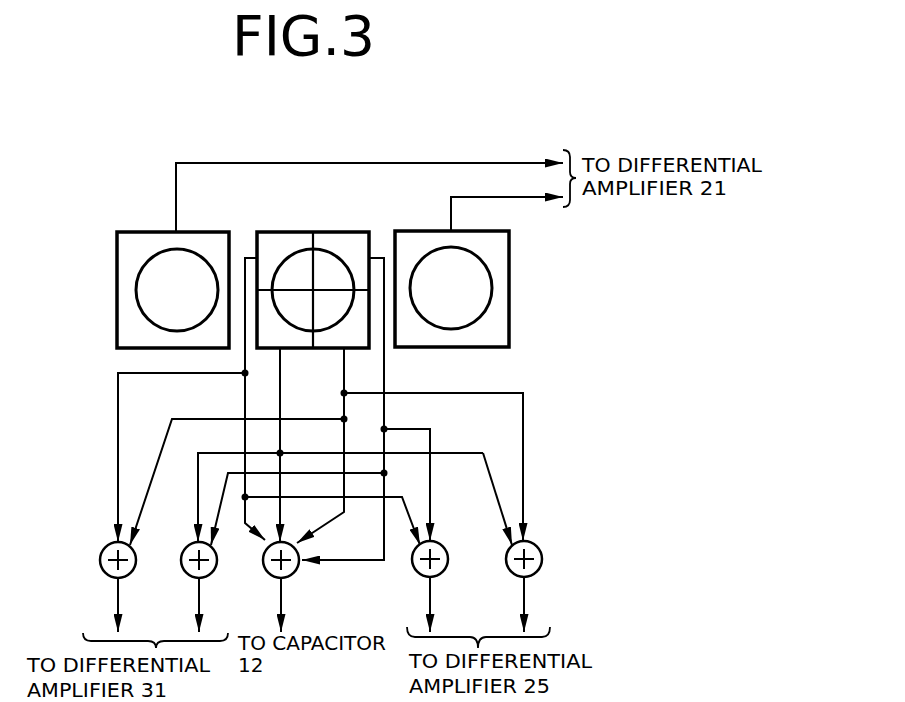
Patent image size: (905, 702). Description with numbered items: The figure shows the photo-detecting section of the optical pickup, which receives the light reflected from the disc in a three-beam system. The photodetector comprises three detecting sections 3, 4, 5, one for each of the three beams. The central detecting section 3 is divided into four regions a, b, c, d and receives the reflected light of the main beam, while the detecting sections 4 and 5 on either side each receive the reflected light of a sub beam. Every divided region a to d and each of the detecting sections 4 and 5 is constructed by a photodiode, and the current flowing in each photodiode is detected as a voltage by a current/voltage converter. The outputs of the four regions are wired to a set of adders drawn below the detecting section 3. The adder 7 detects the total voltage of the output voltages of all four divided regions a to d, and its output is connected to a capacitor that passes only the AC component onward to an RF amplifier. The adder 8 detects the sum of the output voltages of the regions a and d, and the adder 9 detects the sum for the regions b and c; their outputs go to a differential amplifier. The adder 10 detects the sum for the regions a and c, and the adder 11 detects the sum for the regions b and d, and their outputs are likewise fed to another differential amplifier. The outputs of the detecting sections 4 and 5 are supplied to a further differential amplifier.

The detecting section 3 is at (316, 227).
The detecting section 4 is at (117, 276).
The detecting section 5 is at (510, 278).
The adder 7 is at (269, 575).
The adder 8 is at (446, 549).
The adder 9 is at (540, 549).
The adder 10 is at (193, 575).
The adder 11 is at (104, 571).
The divided region a is at (348, 231).
The divided region b is at (323, 349).
The divided region c is at (265, 349).
The divided region d is at (280, 231).